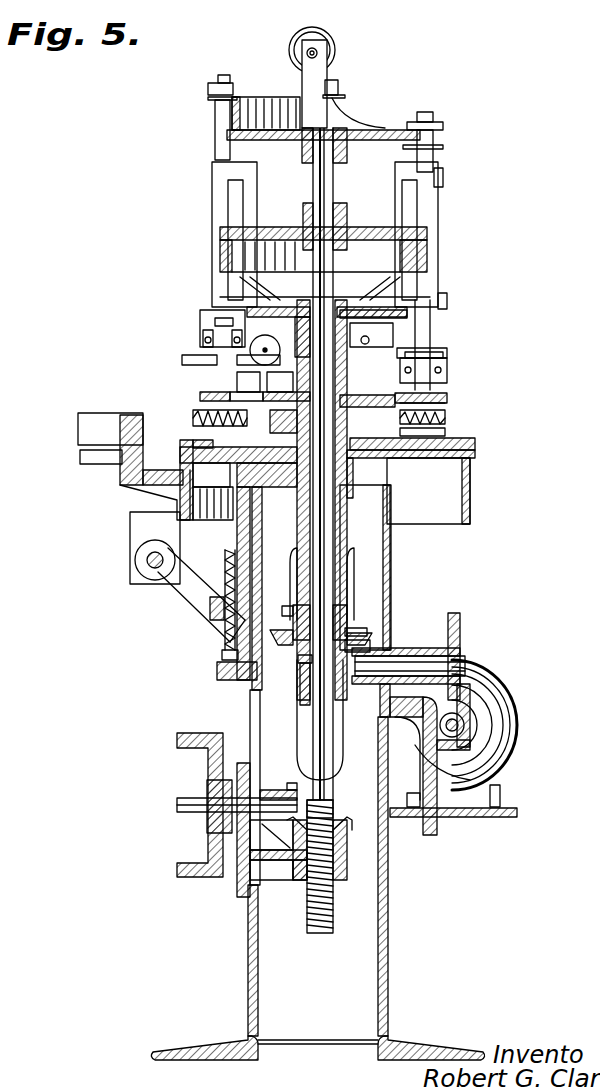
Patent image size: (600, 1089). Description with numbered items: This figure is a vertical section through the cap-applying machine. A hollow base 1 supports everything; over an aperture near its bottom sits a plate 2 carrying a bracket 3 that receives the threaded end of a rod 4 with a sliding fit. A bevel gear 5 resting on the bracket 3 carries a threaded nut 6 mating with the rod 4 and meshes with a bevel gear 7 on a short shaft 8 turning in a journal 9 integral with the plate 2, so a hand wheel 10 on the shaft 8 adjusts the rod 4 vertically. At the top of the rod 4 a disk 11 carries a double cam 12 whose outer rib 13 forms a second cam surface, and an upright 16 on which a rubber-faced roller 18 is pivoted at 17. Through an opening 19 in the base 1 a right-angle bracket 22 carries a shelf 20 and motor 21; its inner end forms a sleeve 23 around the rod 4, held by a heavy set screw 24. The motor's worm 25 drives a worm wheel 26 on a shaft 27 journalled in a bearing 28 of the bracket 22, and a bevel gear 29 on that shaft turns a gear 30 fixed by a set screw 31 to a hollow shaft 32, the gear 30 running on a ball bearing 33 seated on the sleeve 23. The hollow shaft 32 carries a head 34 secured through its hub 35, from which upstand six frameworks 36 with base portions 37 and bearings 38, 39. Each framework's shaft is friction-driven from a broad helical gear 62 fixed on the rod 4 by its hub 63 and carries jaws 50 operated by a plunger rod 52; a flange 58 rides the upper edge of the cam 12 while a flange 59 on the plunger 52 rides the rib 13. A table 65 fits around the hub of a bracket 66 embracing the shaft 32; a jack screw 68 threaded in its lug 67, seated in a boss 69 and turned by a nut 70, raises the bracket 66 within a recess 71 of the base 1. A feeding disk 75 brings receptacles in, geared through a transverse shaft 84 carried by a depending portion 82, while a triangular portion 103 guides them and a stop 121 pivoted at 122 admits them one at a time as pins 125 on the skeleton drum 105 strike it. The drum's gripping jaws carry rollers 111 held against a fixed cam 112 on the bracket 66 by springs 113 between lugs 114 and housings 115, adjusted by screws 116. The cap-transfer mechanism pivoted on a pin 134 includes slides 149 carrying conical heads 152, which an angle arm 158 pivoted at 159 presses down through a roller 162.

The hollow base 1 is at (388, 922).
The plate 2 is at (240, 895).
The bracket 3 is at (278, 862).
The rod 4 is at (333, 925).
The bevel gear 5 is at (347, 845).
The threaded nut 6 is at (333, 806).
The bevel gear 7 is at (290, 783).
The short shaft 8 is at (207, 825).
The journal 9 is at (278, 840).
The hand wheel 10 is at (180, 870).
The disk 11 is at (383, 128).
The double cam 12 is at (268, 93).
The cam rib 13 is at (215, 118).
The upright 16 is at (327, 68).
The pivot 17 is at (318, 53).
The roller 18 is at (318, 30).
The opening 19 is at (391, 560).
The shelf 20 is at (517, 812).
The motor 21 is at (514, 722).
The bracket 22 is at (490, 781).
The sleeve 23 is at (302, 705).
The set screw 24 is at (300, 663).
The worm 25 is at (458, 720).
The worm wheel 26 is at (460, 618).
The shaft 27 is at (465, 665).
The bearing 28 is at (430, 643).
The bevel gear 29 is at (370, 645).
The gear 30 is at (367, 630).
The set screw 31 is at (293, 612).
The hollow shaft 32 is at (350, 575).
The ball bearing 33 is at (347, 620).
The head 34 is at (430, 315).
The hub 35 is at (393, 333).
The framework 36 is at (212, 197).
The base portion 37 is at (242, 296).
The bearing 38 is at (443, 178).
The bearing 39 is at (447, 300).
The jaw 50 is at (205, 325).
The plunger rod 52 is at (224, 75).
The flange 58 is at (208, 88).
The flange 59 is at (208, 99).
The helical gear 62 is at (222, 248).
The hub 63 is at (345, 208).
The table 65 is at (470, 492).
The bracket 66 is at (250, 503).
The lug 67 is at (205, 620).
The jack screw 68 is at (225, 636).
The boss 69 is at (217, 670).
The nut 70 is at (222, 655).
The recess 71 is at (262, 520).
The feeding disk 75 is at (80, 455).
The depending portion 82 is at (130, 527).
The transverse shaft 84 is at (147, 560).
The triangular shaped portion 103 is at (110, 429).
The skeleton drum 105 is at (200, 396).
The roller 111 is at (475, 444).
The cam 112 is at (378, 460).
The spring 113 is at (445, 432).
The lug 114 is at (445, 398).
The spring housing 115 is at (445, 405).
The screw 116 is at (193, 418).
The stop 121 is at (138, 410).
The pivot 122 is at (193, 444).
The pin 125 is at (327, 483).
The upstanding pin 134 is at (443, 355).
The slide 149 is at (237, 382).
The head 152 is at (182, 360).
The angle arm 158 is at (360, 378).
The pivot 159 is at (447, 352).
The roller 162 is at (205, 340).